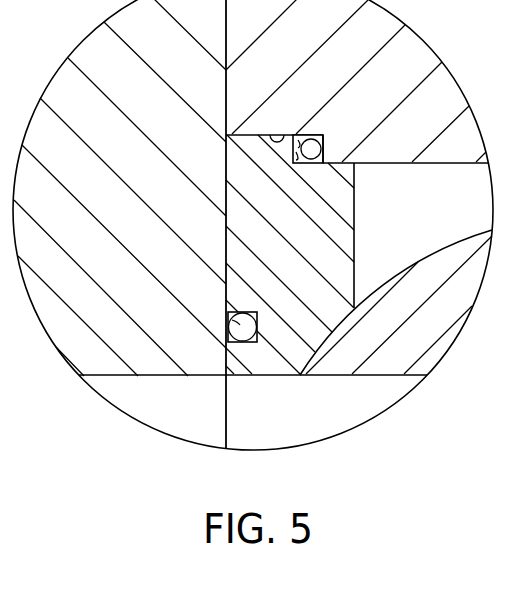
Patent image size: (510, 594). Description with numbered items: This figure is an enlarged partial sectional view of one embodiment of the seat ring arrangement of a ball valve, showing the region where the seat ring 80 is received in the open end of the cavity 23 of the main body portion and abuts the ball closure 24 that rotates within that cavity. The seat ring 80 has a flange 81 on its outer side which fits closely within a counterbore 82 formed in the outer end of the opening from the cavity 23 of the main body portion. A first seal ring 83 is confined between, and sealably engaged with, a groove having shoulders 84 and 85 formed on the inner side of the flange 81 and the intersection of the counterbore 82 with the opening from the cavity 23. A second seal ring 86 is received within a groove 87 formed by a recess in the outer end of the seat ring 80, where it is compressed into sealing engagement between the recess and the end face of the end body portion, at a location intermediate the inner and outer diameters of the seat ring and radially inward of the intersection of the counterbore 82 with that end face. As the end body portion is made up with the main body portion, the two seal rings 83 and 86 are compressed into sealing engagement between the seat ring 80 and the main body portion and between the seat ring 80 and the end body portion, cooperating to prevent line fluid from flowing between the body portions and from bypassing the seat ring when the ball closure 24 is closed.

The seat ring 80 is at (226, 228).
The flange 81 is at (238, 133).
The counterbore 82 is at (272, 142).
The first seal ring 83 is at (307, 143).
The shoulder 84 is at (303, 163).
The shoulder 85 is at (323, 143).
The cavity 23 is at (400, 165).
The ball closure 24 is at (454, 243).
The second seal ring 86 is at (246, 320).
The groove 87 is at (232, 336).